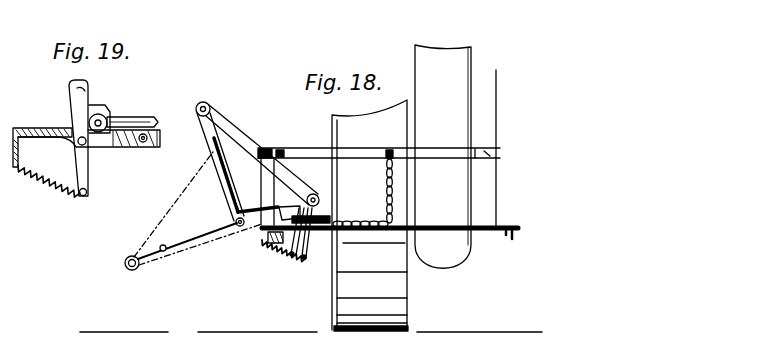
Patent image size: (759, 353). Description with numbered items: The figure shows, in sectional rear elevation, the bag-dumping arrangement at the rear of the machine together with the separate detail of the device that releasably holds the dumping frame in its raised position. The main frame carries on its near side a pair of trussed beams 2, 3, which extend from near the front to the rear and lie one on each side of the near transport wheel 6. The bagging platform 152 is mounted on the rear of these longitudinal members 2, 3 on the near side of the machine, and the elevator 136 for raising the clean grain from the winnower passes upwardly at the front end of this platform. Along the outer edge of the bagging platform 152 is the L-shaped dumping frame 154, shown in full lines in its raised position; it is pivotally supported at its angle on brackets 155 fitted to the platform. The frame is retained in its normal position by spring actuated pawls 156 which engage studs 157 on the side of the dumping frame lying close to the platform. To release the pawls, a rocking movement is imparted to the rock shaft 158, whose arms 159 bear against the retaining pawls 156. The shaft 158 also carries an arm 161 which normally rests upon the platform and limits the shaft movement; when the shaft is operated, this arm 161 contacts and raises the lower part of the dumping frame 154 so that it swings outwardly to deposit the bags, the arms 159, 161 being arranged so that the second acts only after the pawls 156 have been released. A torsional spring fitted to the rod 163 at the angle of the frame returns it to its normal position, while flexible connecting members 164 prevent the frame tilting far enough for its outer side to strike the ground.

In FIG. 18, the trussed beam 2 is at (268, 233).
In FIG. 18, the trussed beam 3 is at (514, 232).
In FIG. 18, the near transport wheel 6 is at (370, 215).
In FIG. 18, the elevator 136 is at (443, 156).
In FIG. 18, the bagging platform 152 is at (431, 227).
In FIG. 18, the L-shaped dumping frame 154 is at (220, 187).
In FIG. 18, the bracket 155 is at (247, 230).
In FIG. 19, the spring actuated pawl 156 is at (86, 100).
In FIG. 18, the spring actuated pawl 156 is at (287, 253).
In FIG. 18, the stud 157 is at (302, 183).
In FIG. 19, the rock shaft 158 is at (109, 121).
In FIG. 18, the rock shaft 158 is at (306, 250).
In FIG. 19, the arm 159 is at (103, 114).
In FIG. 18, the arm 159 is at (319, 197).
In FIG. 19, the arm 161 is at (148, 122).
In FIG. 18, the arm 161 is at (328, 221).
In FIG. 18, the rod 163 is at (236, 222).
In FIG. 18, the flexible connecting member 164 is at (396, 182).